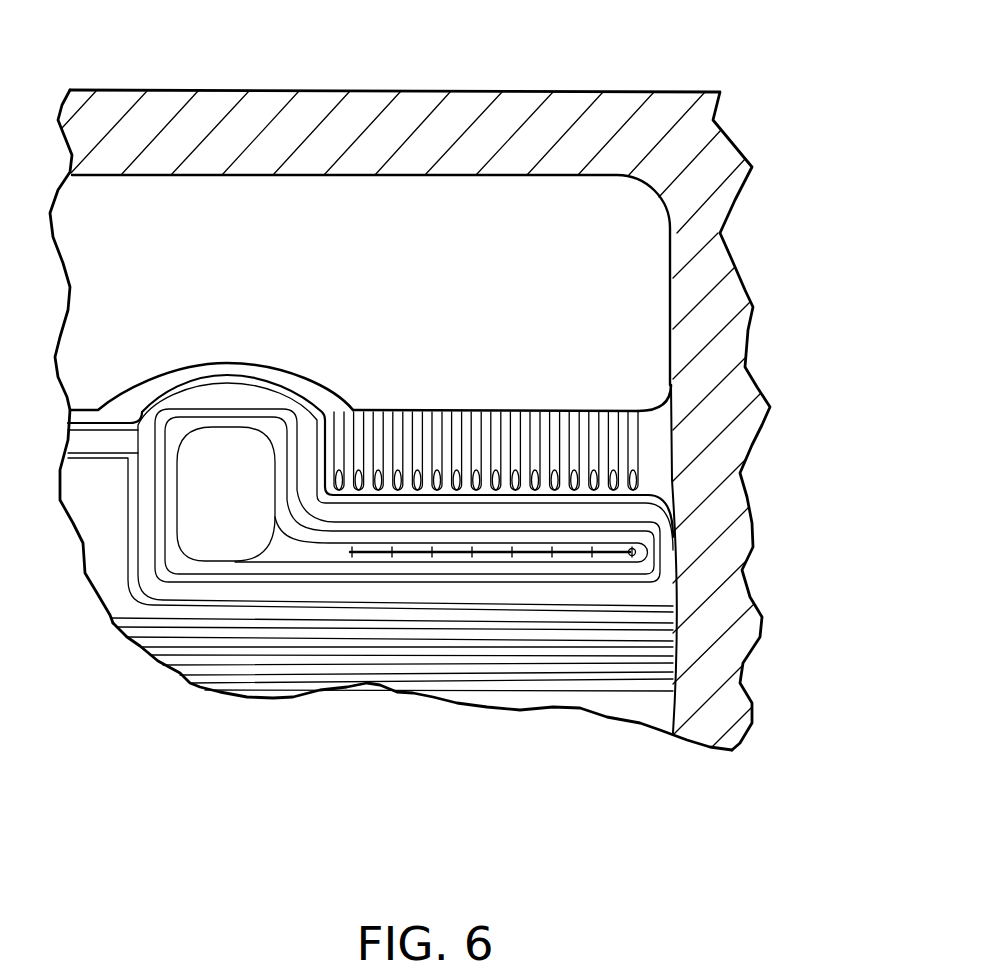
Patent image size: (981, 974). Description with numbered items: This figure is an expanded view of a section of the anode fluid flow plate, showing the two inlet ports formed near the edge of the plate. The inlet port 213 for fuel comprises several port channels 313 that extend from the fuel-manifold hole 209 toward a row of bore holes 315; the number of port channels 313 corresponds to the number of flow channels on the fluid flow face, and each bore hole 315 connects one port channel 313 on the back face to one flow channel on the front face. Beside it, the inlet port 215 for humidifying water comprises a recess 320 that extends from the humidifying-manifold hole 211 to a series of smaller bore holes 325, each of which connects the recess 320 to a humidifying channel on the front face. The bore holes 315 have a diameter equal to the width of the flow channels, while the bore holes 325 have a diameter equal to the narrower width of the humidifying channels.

The hole 209 is at (333, 213).
The hole 211 is at (193, 527).
The inlet port 213 is at (457, 382).
The inlet port 215 is at (493, 585).
The port channels 313 is at (634, 412).
The bore holes 315 is at (618, 490).
The recess 320 is at (280, 547).
The bore holes 325 is at (353, 550).